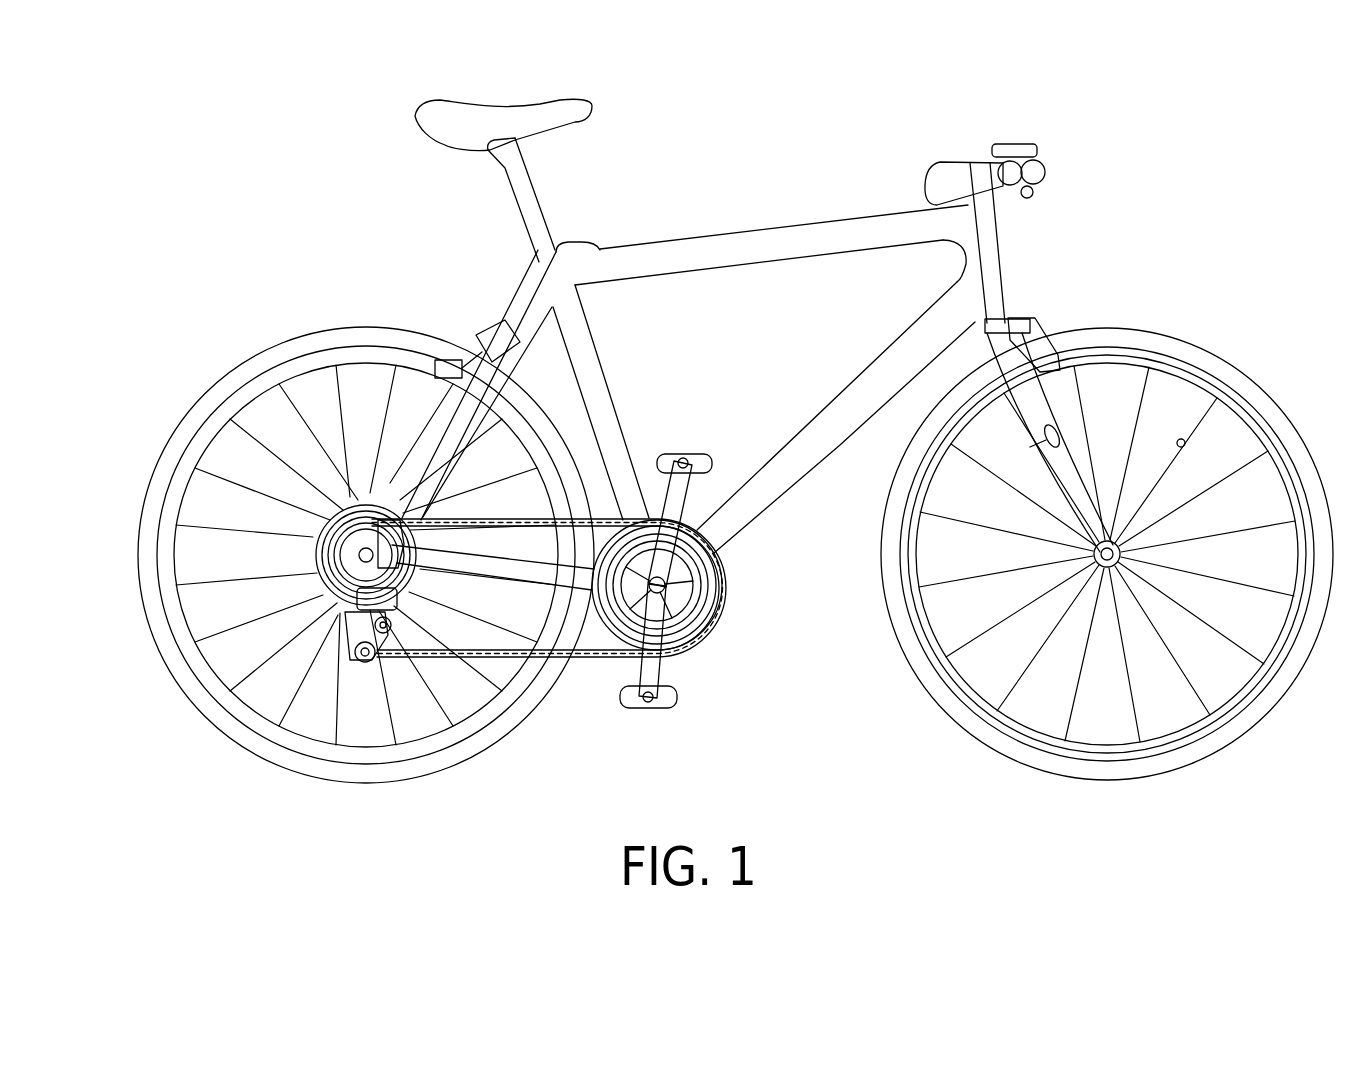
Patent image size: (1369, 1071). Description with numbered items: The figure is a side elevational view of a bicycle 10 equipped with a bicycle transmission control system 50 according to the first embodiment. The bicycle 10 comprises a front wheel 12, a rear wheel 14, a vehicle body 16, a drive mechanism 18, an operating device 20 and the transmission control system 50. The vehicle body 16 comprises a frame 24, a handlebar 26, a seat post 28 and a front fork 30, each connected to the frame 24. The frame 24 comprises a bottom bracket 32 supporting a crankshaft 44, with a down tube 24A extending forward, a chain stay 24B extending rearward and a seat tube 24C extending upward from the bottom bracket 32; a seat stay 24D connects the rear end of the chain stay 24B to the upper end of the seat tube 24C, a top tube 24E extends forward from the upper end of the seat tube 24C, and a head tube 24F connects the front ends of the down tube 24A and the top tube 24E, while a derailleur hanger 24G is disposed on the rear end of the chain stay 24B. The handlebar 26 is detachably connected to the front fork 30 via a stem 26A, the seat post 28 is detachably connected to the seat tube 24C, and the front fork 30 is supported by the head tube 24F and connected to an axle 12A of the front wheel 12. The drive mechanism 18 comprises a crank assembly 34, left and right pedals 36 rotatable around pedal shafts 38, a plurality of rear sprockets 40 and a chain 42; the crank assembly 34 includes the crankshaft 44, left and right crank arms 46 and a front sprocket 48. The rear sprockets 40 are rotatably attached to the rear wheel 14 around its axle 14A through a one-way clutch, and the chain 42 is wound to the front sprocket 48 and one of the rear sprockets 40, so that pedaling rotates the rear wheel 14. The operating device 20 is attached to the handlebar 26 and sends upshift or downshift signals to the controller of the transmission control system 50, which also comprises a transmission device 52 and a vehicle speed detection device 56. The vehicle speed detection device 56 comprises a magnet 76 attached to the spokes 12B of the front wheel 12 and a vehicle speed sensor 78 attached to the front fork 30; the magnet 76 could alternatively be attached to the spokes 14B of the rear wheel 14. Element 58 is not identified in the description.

The bicycle 10 is at (1105, 78).
The front wheel 12 is at (1107, 542).
The axle 12A is at (1150, 542).
The spokes 12B is at (1178, 470).
The rear wheel 14 is at (366, 542).
The axle 14A is at (330, 532).
The spokes 14B is at (205, 466).
The vehicle body 16 is at (691, 385).
The drive mechanism 18 is at (716, 748).
The operating device 20 is at (1027, 200).
The frame 24 is at (691, 391).
The down tube 24A is at (806, 468).
The chain stay 24B is at (508, 578).
The seat tube 24C is at (605, 360).
The seat stay 24D is at (420, 450).
The top tube 24E is at (805, 230).
The head tube 24F is at (948, 258).
The derailleur hanger 24G is at (385, 500).
The handlebar 26 is at (1047, 182).
The stem 26A is at (976, 162).
The seat post 28 is at (543, 196).
The front fork 30 is at (1020, 428).
The bottom bracket 32 is at (682, 585).
The crank assembly 34 is at (690, 655).
The pedals 36 is at (664, 450).
The pedal shafts 38 is at (690, 456).
The rear sprockets 40 is at (320, 600).
The chain 42 is at (585, 660).
The crankshaft 44 is at (718, 618).
The crank arms 46 is at (696, 472).
The front sprocket 48 is at (725, 588).
The transmission control system 50 is at (322, 675).
The transmission device 52 is at (404, 672).
The vehicle speed detection device 56 is at (1050, 418).
The tension pulley 58 is at (362, 668).
The magnet 76 is at (1181, 438).
The vehicle speed sensor 78 is at (1062, 434).